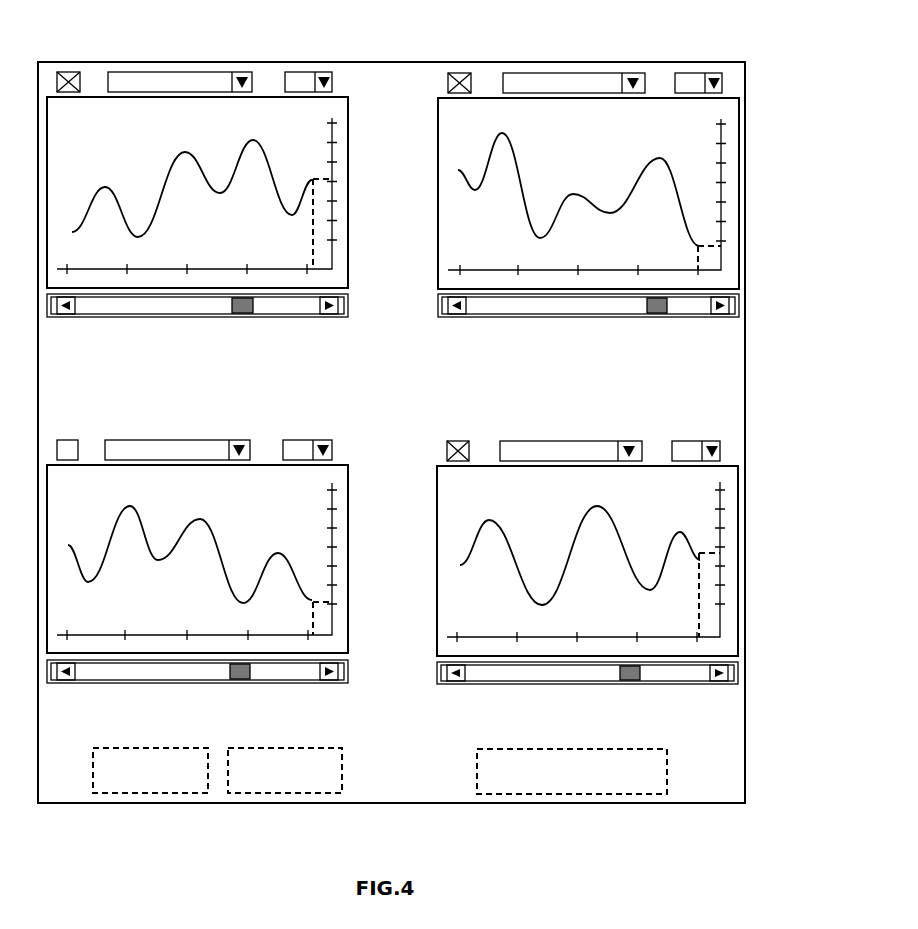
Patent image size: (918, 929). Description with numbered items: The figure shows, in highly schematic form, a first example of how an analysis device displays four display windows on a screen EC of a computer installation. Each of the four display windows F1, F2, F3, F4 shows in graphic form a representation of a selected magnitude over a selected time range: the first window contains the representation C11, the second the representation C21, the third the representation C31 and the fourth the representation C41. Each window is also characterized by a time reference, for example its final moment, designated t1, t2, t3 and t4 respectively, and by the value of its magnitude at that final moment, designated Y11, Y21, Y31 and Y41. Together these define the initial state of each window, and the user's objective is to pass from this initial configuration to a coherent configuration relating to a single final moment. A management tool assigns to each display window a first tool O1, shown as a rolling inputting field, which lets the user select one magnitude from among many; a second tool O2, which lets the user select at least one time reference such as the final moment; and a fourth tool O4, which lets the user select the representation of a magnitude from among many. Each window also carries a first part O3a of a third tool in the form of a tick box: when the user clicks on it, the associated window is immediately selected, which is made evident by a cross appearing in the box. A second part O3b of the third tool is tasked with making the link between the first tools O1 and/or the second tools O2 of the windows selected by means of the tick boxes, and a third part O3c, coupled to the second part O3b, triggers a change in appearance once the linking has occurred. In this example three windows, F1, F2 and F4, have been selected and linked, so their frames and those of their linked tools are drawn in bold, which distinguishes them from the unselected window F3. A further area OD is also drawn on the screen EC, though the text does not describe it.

The screen EC is at (585, 804).
The display window F1 is at (46, 113).
The display window F2 is at (438, 114).
The display window F3 is at (46, 481).
The display window F4 is at (436, 483).
The first part of the third tool O3a is at (73, 62).
The first tool O1 is at (171, 62).
The fourth tool O4 is at (302, 62).
The second tool O2 is at (160, 334).
The representation of a selected magnitude C11 is at (165, 182).
The representation of a selected magnitude C21 is at (623, 182).
The representation of a selected magnitude C31 is at (226, 589).
The representation of a selected magnitude C41 is at (573, 536).
The value of the magnitude at the final moment Y11 is at (333, 179).
The value of the magnitude at the final moment Y21 is at (723, 246).
The value of the magnitude at the final moment Y31 is at (333, 602).
The value of the magnitude at the final moment Y41 is at (723, 553).
The time reference t1 is at (313, 271).
The time reference t2 is at (700, 271).
The time reference t3 is at (314, 636).
The time reference t4 is at (700, 639).
The second part of the third tool O3b is at (150, 794).
The third part of the third tool O3c is at (285, 794).
The data display area OD is at (508, 795).